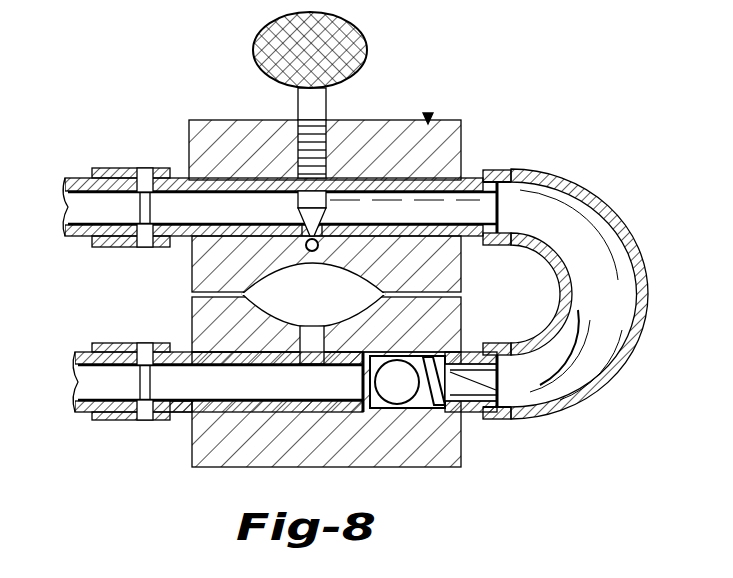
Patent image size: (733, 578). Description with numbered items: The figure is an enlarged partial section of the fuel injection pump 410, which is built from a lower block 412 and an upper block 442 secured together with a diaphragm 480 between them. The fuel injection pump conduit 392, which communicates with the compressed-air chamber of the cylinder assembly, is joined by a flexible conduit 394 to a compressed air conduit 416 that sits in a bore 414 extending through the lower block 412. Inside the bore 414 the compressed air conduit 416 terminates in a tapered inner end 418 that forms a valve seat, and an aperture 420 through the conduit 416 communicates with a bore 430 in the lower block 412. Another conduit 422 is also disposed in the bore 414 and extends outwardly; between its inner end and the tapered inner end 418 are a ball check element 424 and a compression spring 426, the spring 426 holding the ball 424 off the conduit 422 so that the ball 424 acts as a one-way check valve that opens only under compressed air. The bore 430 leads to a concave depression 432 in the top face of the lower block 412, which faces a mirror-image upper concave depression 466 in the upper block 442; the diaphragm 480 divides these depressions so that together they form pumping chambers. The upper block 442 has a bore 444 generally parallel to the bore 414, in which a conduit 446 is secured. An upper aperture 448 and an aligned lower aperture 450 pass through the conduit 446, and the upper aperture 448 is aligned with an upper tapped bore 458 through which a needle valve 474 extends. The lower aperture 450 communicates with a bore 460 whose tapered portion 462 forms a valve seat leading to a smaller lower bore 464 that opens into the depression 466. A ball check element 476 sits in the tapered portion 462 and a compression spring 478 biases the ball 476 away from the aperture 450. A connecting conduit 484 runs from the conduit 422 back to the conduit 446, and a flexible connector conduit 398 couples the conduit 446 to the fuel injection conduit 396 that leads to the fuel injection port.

The needle valve 474 is at (354, 40).
The upper tapped bore 458 is at (322, 122).
The upper aperture 448 is at (330, 166).
The upper block 442 is at (222, 135).
The fuel injection pump 410 is at (351, 285).
The conduit 446 is at (484, 172).
The flexible connector conduit 398 is at (112, 170).
The fuel injection conduit 396 is at (66, 212).
The compression spring 478 is at (285, 230).
The lower aperture 450 is at (316, 226).
The bore 460 is at (328, 224).
The ball check element 476 is at (305, 242).
The tapered portion 462 is at (325, 244).
The lower bore 464 is at (280, 270).
The upper concave depression 466 is at (370, 276).
The bore 444 is at (480, 244).
The concave depression 432 is at (270, 308).
The bore 430 is at (300, 340).
The diaphragm 480 is at (370, 313).
The fuel injection pump conduit 392 is at (76, 392).
The aperture 420 is at (300, 368).
The compression spring 426 is at (482, 388).
The connecting conduit 484 is at (626, 366).
The flexible conduit 394 is at (120, 425).
The compressed air conduit 416 is at (175, 425).
The lower block 412 is at (262, 466).
The tapered inner end 418 is at (382, 403).
The bore 414 is at (398, 404).
The ball check element 424 is at (430, 404).
The conduit 422 is at (486, 420).